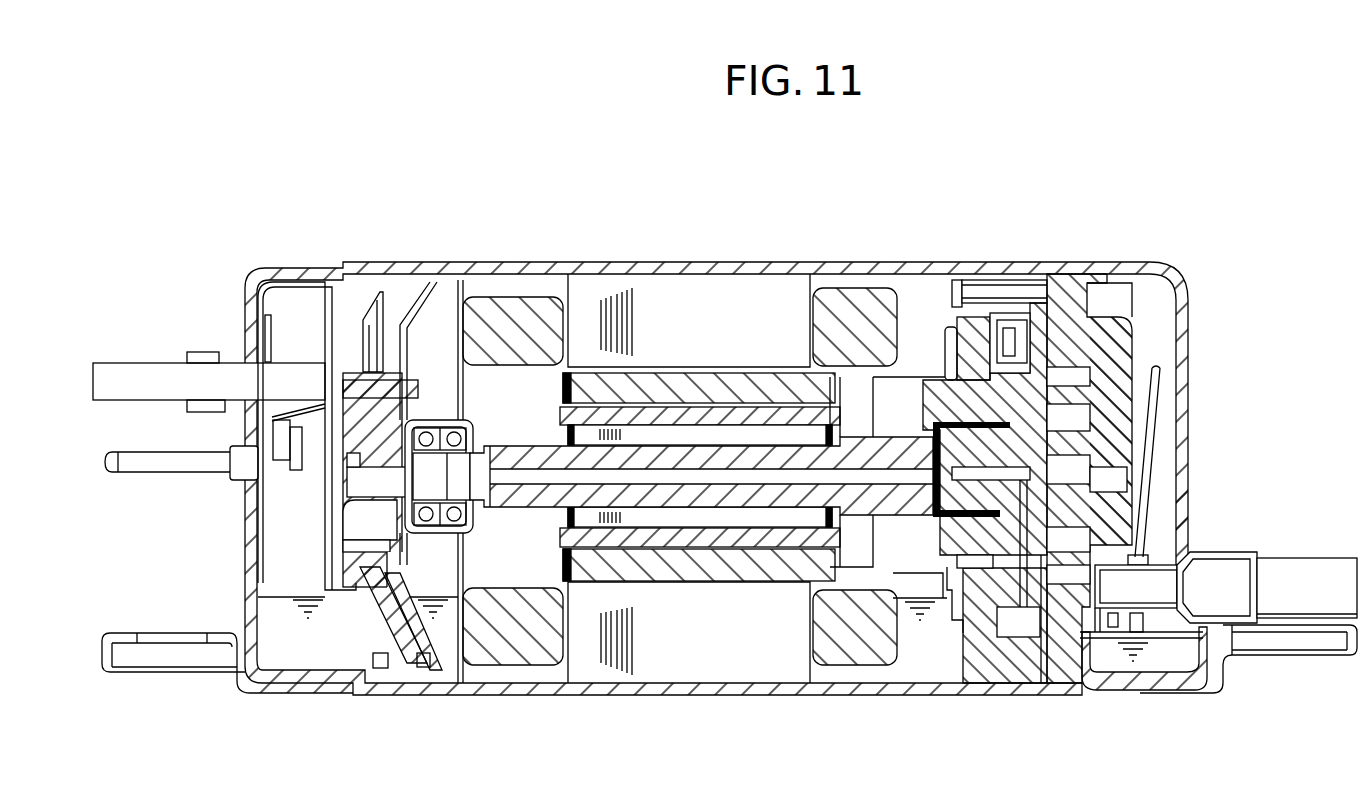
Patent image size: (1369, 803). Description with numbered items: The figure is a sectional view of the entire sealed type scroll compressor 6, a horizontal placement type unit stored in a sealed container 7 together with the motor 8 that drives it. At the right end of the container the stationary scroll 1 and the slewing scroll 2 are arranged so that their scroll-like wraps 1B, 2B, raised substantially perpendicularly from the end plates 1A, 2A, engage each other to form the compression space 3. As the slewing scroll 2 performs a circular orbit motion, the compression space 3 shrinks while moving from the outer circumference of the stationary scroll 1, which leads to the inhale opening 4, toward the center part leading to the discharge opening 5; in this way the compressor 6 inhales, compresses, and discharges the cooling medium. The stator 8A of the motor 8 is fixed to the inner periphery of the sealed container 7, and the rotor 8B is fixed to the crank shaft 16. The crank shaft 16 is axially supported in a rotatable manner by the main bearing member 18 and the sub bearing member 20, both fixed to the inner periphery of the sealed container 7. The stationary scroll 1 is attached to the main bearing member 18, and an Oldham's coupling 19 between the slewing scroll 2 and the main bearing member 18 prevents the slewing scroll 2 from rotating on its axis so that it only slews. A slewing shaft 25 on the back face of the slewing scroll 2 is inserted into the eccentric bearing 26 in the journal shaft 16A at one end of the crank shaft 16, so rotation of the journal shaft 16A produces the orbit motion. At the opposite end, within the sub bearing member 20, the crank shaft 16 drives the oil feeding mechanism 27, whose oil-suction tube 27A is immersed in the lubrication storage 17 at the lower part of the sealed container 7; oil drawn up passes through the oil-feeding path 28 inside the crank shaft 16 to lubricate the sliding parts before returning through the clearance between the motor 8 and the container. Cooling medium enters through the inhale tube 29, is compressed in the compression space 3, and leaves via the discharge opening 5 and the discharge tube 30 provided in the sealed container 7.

The stationary scroll 1 is at (1145, 350).
The end plate 1A is at (1115, 417).
The wrap 1B is at (1073, 405).
The slewing scroll 2 is at (1028, 630).
The end plate 2A is at (993, 585).
The wrap 2B is at (1073, 490).
The compression space 3 is at (1178, 510).
The inhale opening 4 is at (1097, 600).
The discharge opening 5 is at (1117, 480).
The scroll compressor 6 is at (1138, 300).
The sealed container 7 is at (758, 258).
The motor 8 is at (556, 680).
The stator 8A is at (753, 647).
The rotor 8B is at (697, 565).
The crank shaft 16 is at (515, 300).
The journal shaft 16A is at (940, 383).
The lubrication storage 17 is at (330, 660).
The main bearing member 18 is at (975, 317).
The Oldham's coupling 19 is at (1015, 325).
The sub bearing member 20 is at (415, 300).
The slewing shaft 25 is at (973, 487).
The eccentric bearing 26 is at (962, 545).
The oil feeding mechanism 27 is at (357, 523).
The oil-suction tube 27A is at (395, 618).
The oil-feeding path 28 is at (695, 477).
The inhale tube 29 is at (1298, 556).
The discharge tube 30 is at (147, 382).